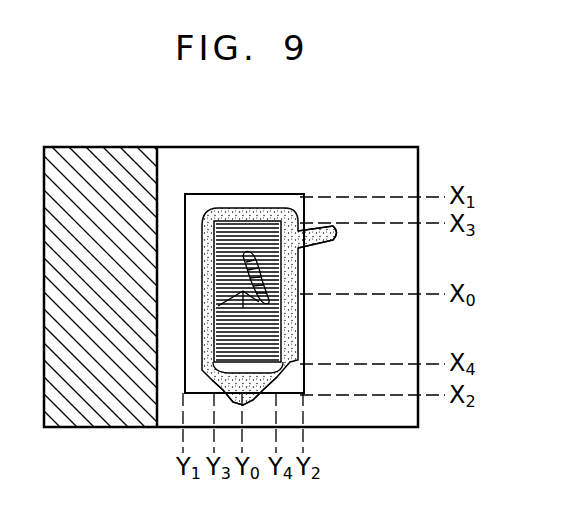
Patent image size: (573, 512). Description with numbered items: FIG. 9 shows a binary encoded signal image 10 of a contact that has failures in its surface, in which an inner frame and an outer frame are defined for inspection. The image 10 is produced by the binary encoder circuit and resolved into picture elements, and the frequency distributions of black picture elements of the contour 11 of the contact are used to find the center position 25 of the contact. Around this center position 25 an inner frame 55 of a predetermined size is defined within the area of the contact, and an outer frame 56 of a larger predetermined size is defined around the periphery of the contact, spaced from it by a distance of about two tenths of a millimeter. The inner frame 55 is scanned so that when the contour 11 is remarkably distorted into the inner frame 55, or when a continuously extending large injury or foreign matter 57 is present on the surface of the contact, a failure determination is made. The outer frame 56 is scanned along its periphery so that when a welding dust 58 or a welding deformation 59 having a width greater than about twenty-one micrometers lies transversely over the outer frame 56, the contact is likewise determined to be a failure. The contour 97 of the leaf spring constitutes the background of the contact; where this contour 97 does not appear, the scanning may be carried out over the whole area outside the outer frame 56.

The binary encoded signal image 10 is at (310, 152).
The contour of the leaf spring 97 is at (159, 158).
The contour 11 is at (208, 217).
The outer frame 56 is at (305, 204).
The welding dust 58 is at (331, 251).
The inner frame 55 is at (278, 330).
The injury or foreign matter 57 is at (266, 298).
The center position 25 is at (218, 306).
The welding deformation 59 is at (264, 398).